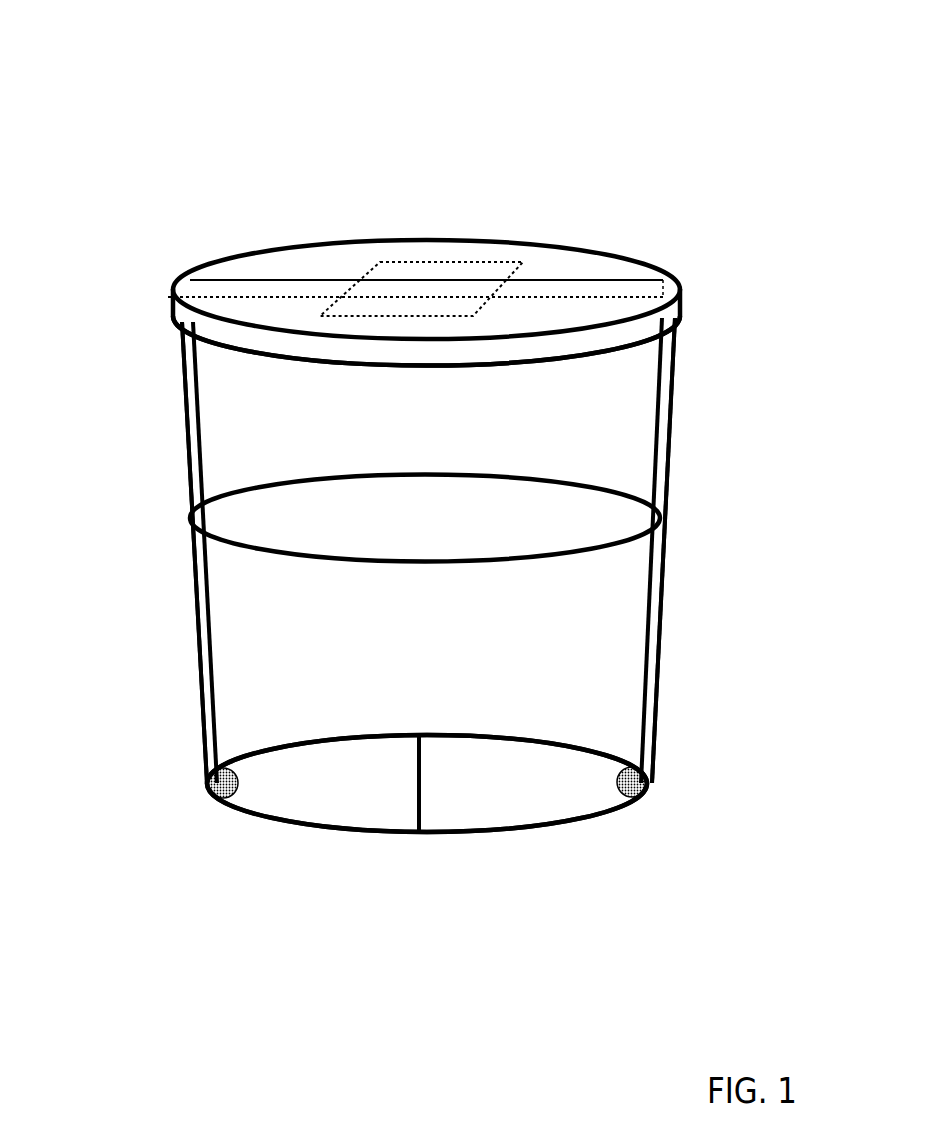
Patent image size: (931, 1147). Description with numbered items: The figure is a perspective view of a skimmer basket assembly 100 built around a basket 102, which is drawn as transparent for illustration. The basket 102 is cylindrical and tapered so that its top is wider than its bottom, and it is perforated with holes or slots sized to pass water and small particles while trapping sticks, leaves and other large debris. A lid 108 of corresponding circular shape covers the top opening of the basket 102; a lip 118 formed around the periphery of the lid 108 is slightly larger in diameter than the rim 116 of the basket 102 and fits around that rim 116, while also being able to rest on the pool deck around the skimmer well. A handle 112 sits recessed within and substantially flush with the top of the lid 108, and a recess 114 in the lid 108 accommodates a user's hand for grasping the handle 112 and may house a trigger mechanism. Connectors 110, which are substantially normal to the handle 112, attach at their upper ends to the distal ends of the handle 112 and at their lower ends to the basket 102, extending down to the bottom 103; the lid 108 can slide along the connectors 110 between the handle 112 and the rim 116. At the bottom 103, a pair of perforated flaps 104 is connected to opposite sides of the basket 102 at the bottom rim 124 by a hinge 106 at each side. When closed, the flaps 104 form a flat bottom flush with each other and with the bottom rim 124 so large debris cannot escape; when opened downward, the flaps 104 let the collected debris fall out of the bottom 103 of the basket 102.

The skimmer basket assembly 100 is at (131, 56).
The basket 102 is at (607, 667).
The bottom 103 is at (373, 880).
The flaps 104 is at (312, 790).
The hinge 106 is at (213, 793).
The lid 108 is at (572, 268).
The connectors 110 is at (195, 428).
The handle 112 is at (285, 290).
The recess 114 is at (410, 272).
The rim 116 is at (267, 553).
The lip 118 is at (202, 325).
The bottom rim 124 is at (445, 835).